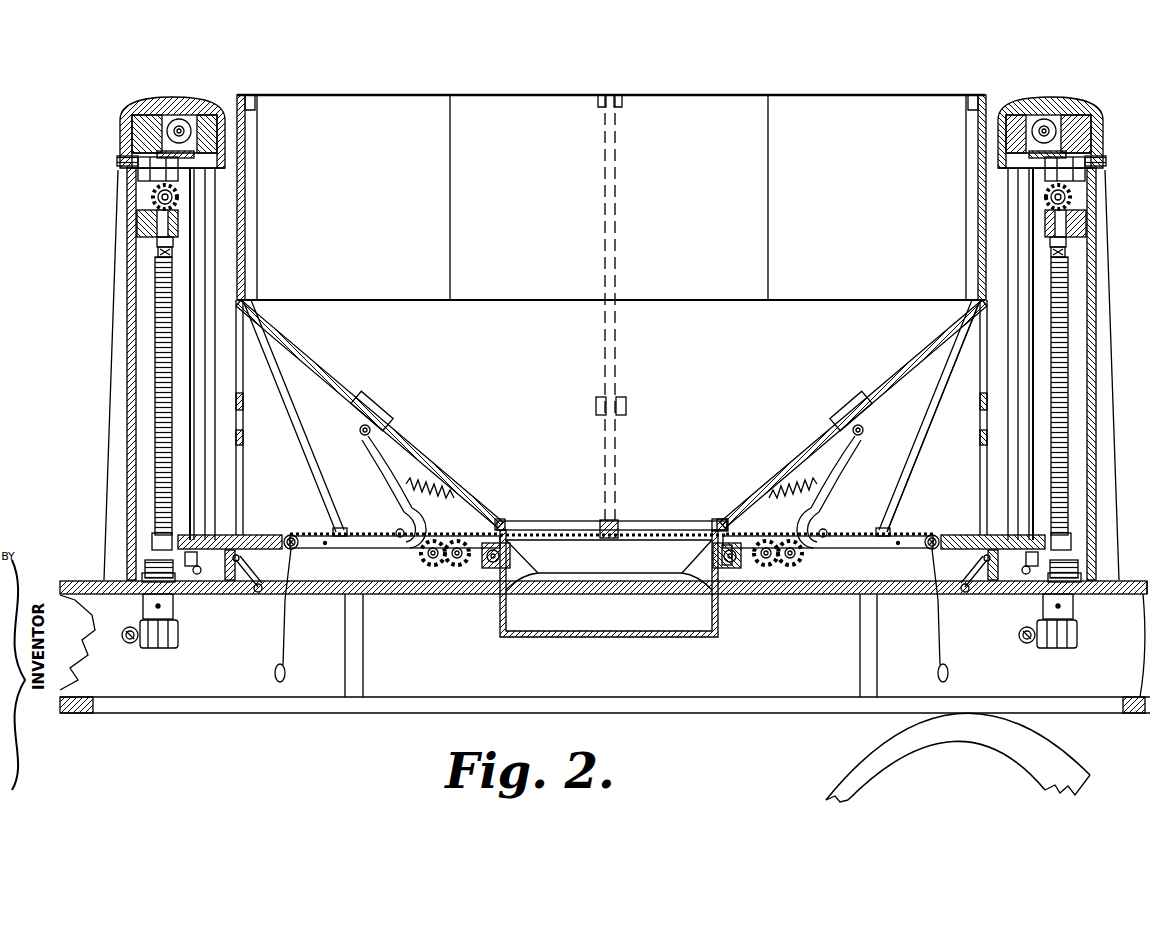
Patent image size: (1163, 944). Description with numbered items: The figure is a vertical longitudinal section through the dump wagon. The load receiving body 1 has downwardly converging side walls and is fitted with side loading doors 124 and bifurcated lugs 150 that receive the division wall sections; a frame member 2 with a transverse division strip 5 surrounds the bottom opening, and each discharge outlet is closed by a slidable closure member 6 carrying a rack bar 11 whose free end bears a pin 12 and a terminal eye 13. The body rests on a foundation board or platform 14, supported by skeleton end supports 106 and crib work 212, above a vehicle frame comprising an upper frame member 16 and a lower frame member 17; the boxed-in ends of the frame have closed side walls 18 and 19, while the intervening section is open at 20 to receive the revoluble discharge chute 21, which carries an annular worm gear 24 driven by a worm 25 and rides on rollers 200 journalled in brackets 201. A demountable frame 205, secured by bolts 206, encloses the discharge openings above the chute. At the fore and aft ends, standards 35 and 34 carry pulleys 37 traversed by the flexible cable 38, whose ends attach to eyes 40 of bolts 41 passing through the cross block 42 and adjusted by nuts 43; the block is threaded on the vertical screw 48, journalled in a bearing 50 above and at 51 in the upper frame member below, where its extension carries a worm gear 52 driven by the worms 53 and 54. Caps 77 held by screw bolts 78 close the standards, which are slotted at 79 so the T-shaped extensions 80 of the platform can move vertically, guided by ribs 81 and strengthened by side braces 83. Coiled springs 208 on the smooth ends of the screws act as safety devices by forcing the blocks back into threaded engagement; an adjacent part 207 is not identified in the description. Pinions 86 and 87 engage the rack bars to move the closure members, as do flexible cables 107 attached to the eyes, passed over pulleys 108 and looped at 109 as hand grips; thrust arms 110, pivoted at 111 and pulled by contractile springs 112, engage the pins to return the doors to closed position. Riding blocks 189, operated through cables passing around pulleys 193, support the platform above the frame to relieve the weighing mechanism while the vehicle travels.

The load receiving body 1 is at (611, 414).
The frame member 2 is at (722, 518).
The division strip 5 is at (605, 520).
The slidable closure member 6 is at (562, 522).
The rack bar 11 is at (612, 548).
The pin 12 is at (410, 510).
The terminal eye 13 is at (396, 530).
The foundation board or platform 14 is at (895, 548).
The upper frame member 16 is at (1140, 597).
The lower frame member 17 is at (1133, 713).
The side wall 18 is at (140, 642).
The side wall 19 is at (1059, 645).
The open side wall section 20 is at (605, 647).
The revoluble discharge chute 21 is at (609, 583).
The annular rack bar or worm gear 24 is at (735, 534).
The worm 25 is at (735, 568).
The standard 34 is at (1096, 493).
The standard 35 is at (127, 520).
The pulley 37 is at (172, 115).
The flexible cable 38 is at (132, 136).
The eye 40 is at (152, 200).
The bolt 41 is at (137, 225).
The cross block 42 is at (157, 241).
The nut 43 is at (158, 252).
The screw 48 is at (155, 300).
The bearing 50 is at (138, 175).
The journal 51 is at (143, 600).
The worm gear 52 is at (178, 633).
The worm 53 is at (128, 644).
The worm 54 is at (1026, 644).
The cap 77 is at (200, 98).
The screw bolt 78 is at (117, 161).
The slot 79 is at (208, 482).
The T-shaped extension 80 is at (220, 535).
The rib 81 is at (215, 470).
The side brace 83 is at (108, 484).
The pinion 86 is at (425, 560).
The pinion 87 is at (800, 560).
The skeleton end support 106 is at (988, 372).
The flexible cable 107 is at (335, 530).
The pulley 108 is at (292, 535).
The loop 109 is at (273, 678).
The thrust arm 110 is at (378, 456).
The pivot 111 is at (360, 431).
The contractile spring 112 is at (405, 485).
The side loading door 124 is at (611, 307).
The bifurcated lug 150 is at (255, 100).
The riding block 189 is at (212, 575).
The pulley 193 is at (258, 595).
The roller 200 is at (495, 570).
The bracket 201 is at (488, 568).
The demountable frame 205 is at (614, 575).
The bolt 206 is at (611, 538).
The gear hub 207 is at (178, 201).
The coiled spring 208 is at (180, 190).
The supporting crib work 212 is at (292, 428).